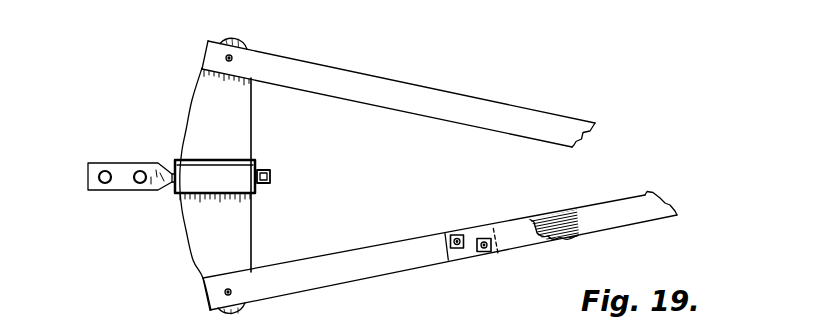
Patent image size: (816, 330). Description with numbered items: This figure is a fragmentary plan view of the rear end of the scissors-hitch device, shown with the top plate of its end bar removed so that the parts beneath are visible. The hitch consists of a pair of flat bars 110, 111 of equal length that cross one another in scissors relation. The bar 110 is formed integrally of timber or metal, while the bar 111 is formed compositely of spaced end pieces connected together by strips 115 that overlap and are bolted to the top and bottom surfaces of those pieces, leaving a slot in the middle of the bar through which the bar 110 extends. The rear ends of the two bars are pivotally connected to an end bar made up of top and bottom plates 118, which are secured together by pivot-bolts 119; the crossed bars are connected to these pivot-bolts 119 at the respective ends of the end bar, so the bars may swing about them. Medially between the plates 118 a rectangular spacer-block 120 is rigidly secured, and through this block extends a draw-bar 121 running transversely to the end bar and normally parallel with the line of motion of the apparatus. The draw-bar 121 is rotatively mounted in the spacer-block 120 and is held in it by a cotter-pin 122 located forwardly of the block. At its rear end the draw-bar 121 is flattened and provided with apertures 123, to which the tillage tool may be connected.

The flat bar 110 is at (443, 112).
The flat bar 111 is at (330, 280).
The strips 115 is at (568, 240).
The top and bottom plates 118 is at (243, 133).
The pivot-bolts 119 is at (225, 292).
The spacer-block 120 is at (240, 187).
The draw-bar 121 is at (271, 174).
The cotter-pin 122 is at (267, 171).
The apertures 123 is at (140, 183).